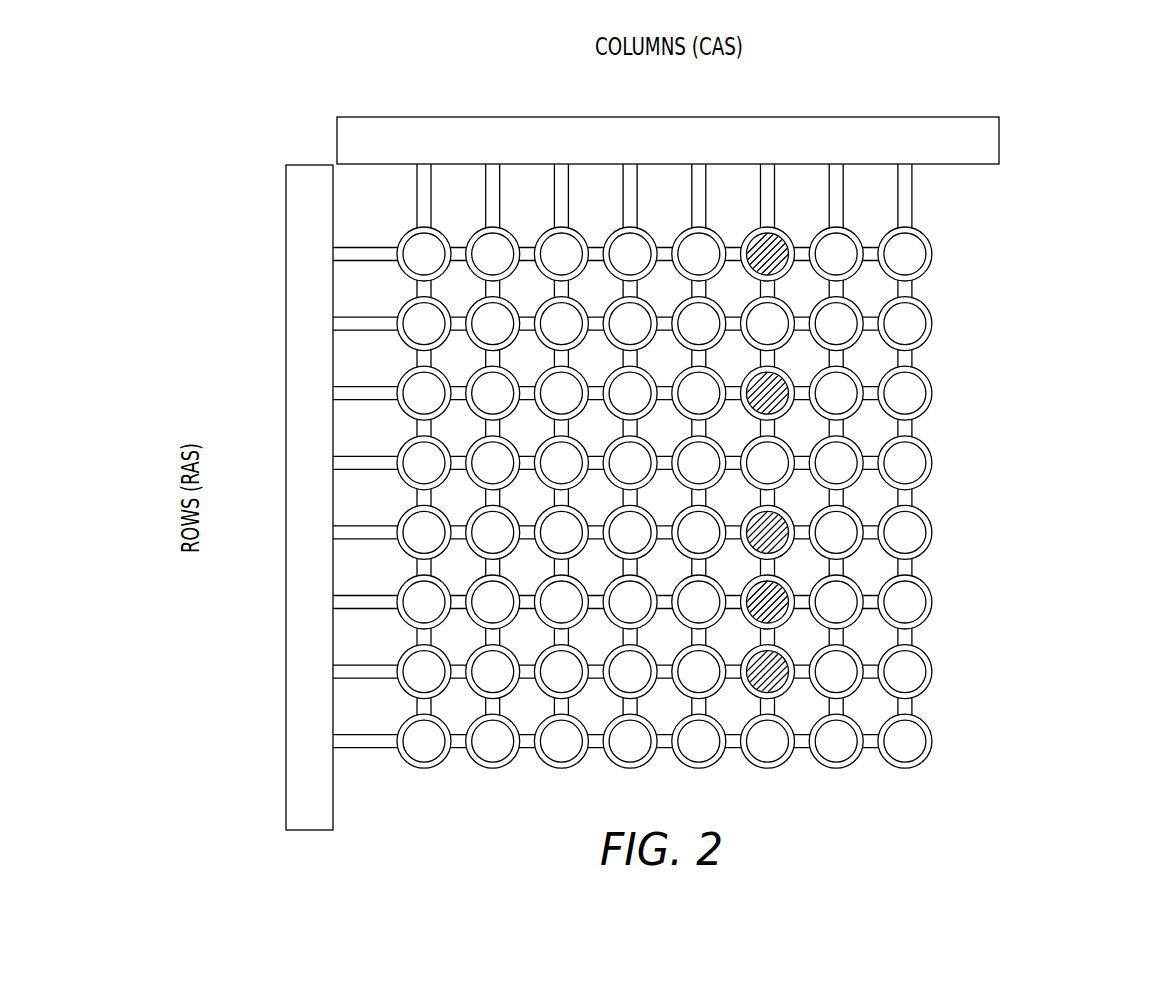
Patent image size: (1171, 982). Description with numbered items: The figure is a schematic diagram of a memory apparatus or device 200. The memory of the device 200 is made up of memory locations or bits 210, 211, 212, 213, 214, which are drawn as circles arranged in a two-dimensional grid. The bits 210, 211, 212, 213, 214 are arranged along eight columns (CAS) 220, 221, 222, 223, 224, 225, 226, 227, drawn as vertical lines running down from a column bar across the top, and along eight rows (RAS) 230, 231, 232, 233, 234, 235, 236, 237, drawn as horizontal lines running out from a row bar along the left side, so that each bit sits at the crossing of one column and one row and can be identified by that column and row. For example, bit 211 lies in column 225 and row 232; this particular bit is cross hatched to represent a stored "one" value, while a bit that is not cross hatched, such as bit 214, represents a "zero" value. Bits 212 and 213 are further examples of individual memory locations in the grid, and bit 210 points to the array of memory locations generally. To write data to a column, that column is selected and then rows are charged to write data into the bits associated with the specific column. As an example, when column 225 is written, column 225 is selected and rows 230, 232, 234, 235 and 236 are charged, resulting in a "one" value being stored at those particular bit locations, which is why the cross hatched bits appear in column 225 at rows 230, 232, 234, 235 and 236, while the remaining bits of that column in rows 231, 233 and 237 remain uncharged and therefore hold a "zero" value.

The memory apparatus or device 200 is at (1096, 116).
The memory location or bit 210 is at (643, 451).
The memory location or bit 211 is at (780, 380).
The memory location or bit 212 is at (557, 678).
The memory location or bit 213 is at (483, 317).
The memory location or bit 214 is at (836, 768).
The column (CAS) 220 is at (432, 182).
The column (CAS) 221 is at (501, 182).
The column (CAS) 222 is at (569, 182).
The column (CAS) 223 is at (638, 182).
The column (CAS) 224 is at (707, 182).
The column (CAS) 225 is at (776, 182).
The column (CAS) 226 is at (844, 182).
The column (CAS) 227 is at (913, 182).
The row (RAS) 230 is at (345, 262).
The row (RAS) 231 is at (345, 332).
The row (RAS) 232 is at (345, 401).
The row (RAS) 233 is at (345, 471).
The row (RAS) 234 is at (345, 540).
The row (RAS) 235 is at (345, 610).
The row (RAS) 236 is at (345, 680).
The row (RAS) 237 is at (345, 749).